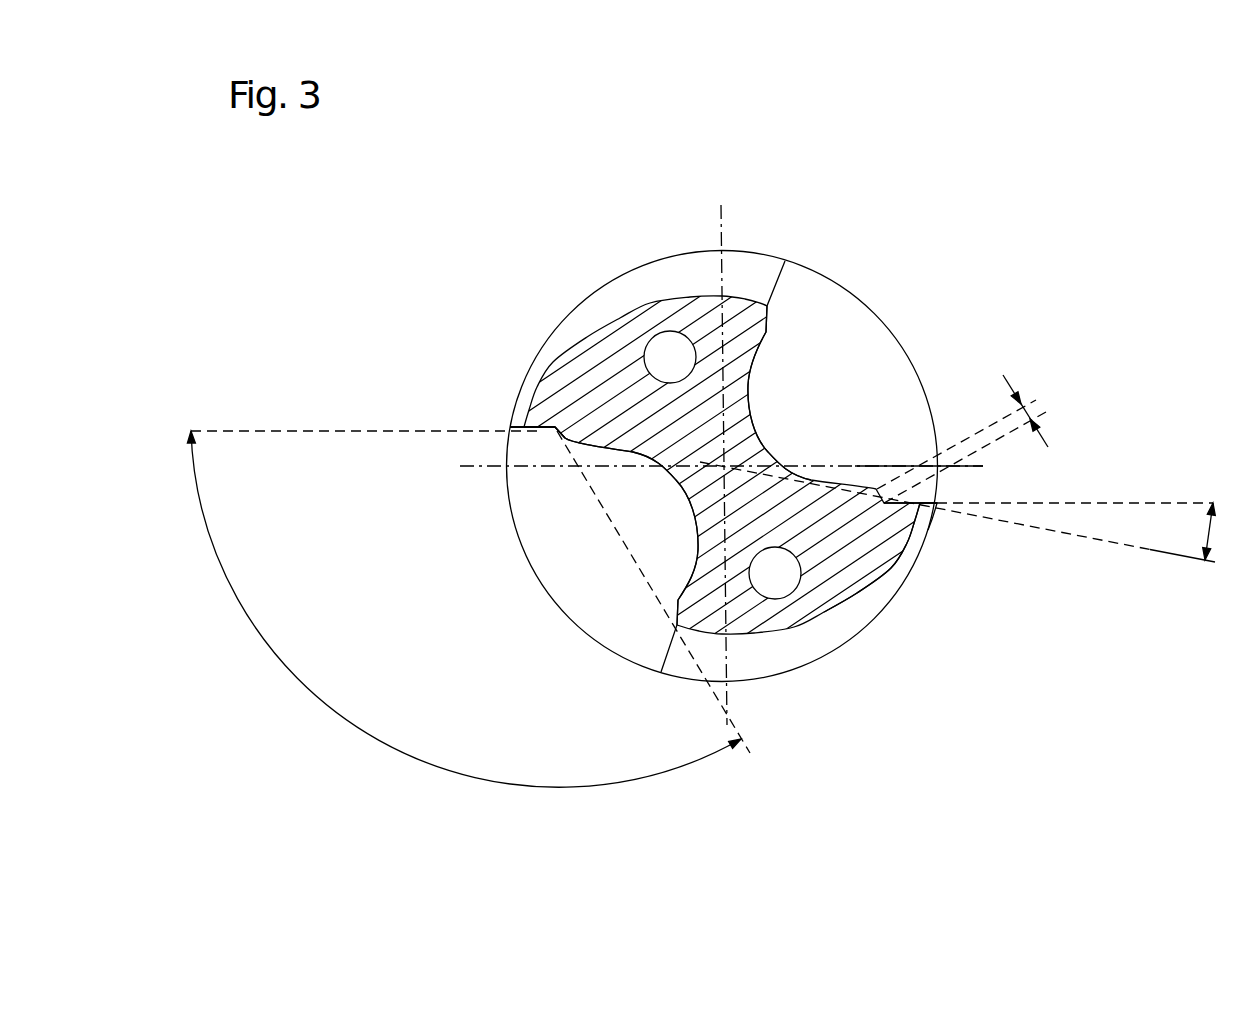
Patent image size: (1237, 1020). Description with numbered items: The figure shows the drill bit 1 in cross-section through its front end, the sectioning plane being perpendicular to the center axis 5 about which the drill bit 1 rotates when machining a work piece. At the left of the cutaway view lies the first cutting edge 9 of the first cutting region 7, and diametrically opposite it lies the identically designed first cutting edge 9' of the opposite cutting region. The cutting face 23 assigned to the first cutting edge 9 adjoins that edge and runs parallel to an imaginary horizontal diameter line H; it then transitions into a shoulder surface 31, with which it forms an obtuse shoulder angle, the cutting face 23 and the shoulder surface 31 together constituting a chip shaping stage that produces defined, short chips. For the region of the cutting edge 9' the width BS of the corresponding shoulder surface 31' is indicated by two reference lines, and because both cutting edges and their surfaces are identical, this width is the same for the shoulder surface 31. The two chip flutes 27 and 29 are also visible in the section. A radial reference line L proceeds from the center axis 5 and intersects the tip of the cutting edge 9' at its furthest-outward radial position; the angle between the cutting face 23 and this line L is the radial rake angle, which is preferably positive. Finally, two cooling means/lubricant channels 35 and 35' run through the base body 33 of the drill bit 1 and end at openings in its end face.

The drill bit 1 is at (612, 252).
The center axis 5 is at (727, 470).
The first cutting region 7 is at (497, 415).
The first cutting edge 9 is at (509, 372).
The first cutting edge 9' is at (944, 528).
The cutting face 23 is at (545, 429).
The chip flute 27 is at (594, 583).
The chip flute 29 is at (838, 353).
The shoulder surface 31 is at (508, 497).
The shoulder surface 31' is at (947, 553).
The base body 33 is at (867, 540).
The cooling means/lubricant channel 35 is at (609, 320).
The cooling means/lubricant channel 35' is at (798, 640).
The horizontal diameter line H is at (855, 466).
The width of the shoulder surface BS is at (964, 429).
The radial reference line L is at (1120, 544).